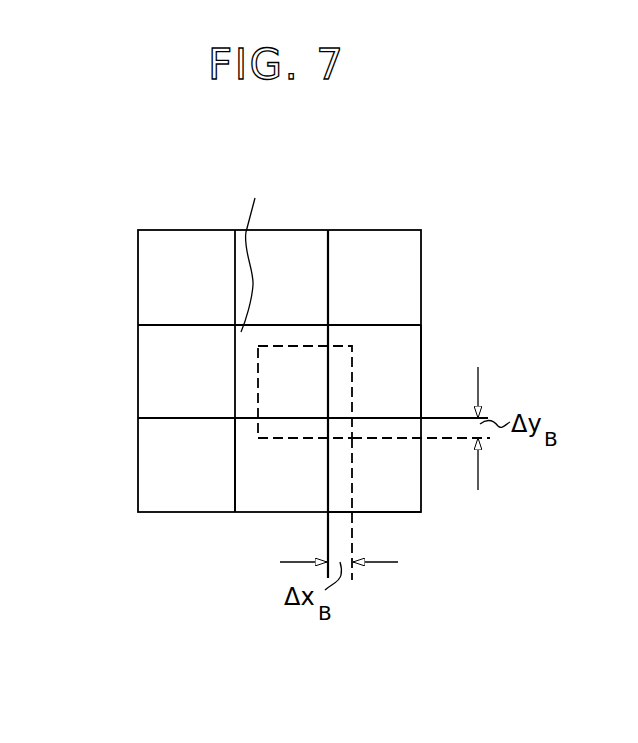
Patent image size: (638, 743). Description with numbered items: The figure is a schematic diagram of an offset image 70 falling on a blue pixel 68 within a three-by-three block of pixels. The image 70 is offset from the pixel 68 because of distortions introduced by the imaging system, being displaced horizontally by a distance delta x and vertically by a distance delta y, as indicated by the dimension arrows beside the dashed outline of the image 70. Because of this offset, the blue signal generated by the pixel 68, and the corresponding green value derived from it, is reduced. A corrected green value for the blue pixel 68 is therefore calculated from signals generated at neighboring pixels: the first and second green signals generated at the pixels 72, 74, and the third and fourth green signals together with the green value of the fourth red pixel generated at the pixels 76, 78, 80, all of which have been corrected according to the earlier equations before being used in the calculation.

The blue pixel 68 is at (257, 251).
The offset image 70 is at (355, 347).
The pixel 72 is at (307, 242).
The pixel 74 is at (145, 391).
The pixel 76 is at (417, 380).
The pixel 78 is at (246, 504).
The pixel 80 is at (413, 494).